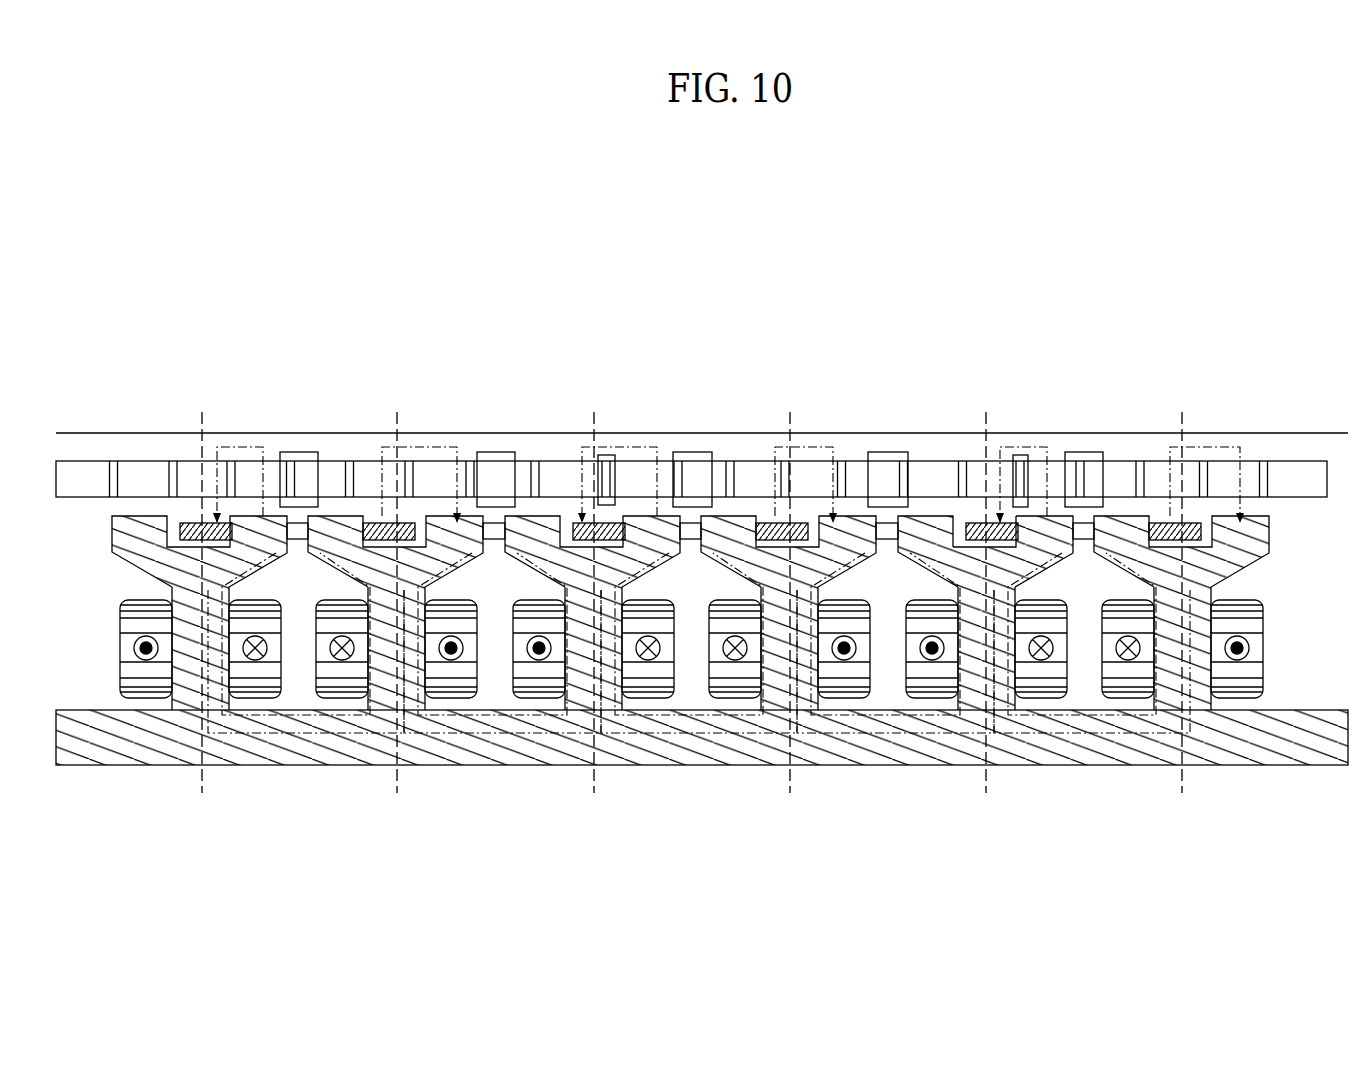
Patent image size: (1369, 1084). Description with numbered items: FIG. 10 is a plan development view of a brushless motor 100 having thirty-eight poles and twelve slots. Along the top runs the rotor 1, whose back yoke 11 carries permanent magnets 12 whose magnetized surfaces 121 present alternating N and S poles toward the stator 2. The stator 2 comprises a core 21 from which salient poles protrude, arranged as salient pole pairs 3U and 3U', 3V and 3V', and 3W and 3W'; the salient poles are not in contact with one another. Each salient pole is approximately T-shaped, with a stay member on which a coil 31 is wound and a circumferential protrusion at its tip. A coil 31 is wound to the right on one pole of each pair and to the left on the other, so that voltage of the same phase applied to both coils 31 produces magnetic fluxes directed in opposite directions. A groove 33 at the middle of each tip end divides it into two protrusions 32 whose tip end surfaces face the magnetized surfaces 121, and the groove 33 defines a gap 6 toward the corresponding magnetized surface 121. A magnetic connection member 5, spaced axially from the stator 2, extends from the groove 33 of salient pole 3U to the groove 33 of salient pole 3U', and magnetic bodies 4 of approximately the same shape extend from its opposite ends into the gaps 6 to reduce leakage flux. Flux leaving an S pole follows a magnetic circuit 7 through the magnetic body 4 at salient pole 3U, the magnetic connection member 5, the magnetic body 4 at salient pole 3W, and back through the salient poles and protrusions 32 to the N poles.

The brushless motor 100 is at (726, 312).
The rotor 1 is at (424, 384).
The back yoke 11 is at (484, 432).
The permanent magnet 12 is at (334, 456).
The magnetized surface 121 is at (302, 505).
The magnetic circuit 7 is at (632, 452).
The stator 2 is at (503, 858).
The core 21 is at (477, 767).
The salient pole 3U is at (199, 641).
The salient pole 3U' is at (395, 641).
The salient pole 3V is at (592, 641).
The salient pole 3V' is at (788, 641).
The salient pole 3W is at (1082, 622).
The salient pole 3W' is at (1181, 643).
The coil 31 is at (1033, 698).
The protrusion 32 is at (946, 516).
The groove 33 is at (907, 545).
The magnetic body 4 is at (980, 541).
The magnetic connection member 5 is at (1083, 522).
The gap 6 is at (1005, 550).